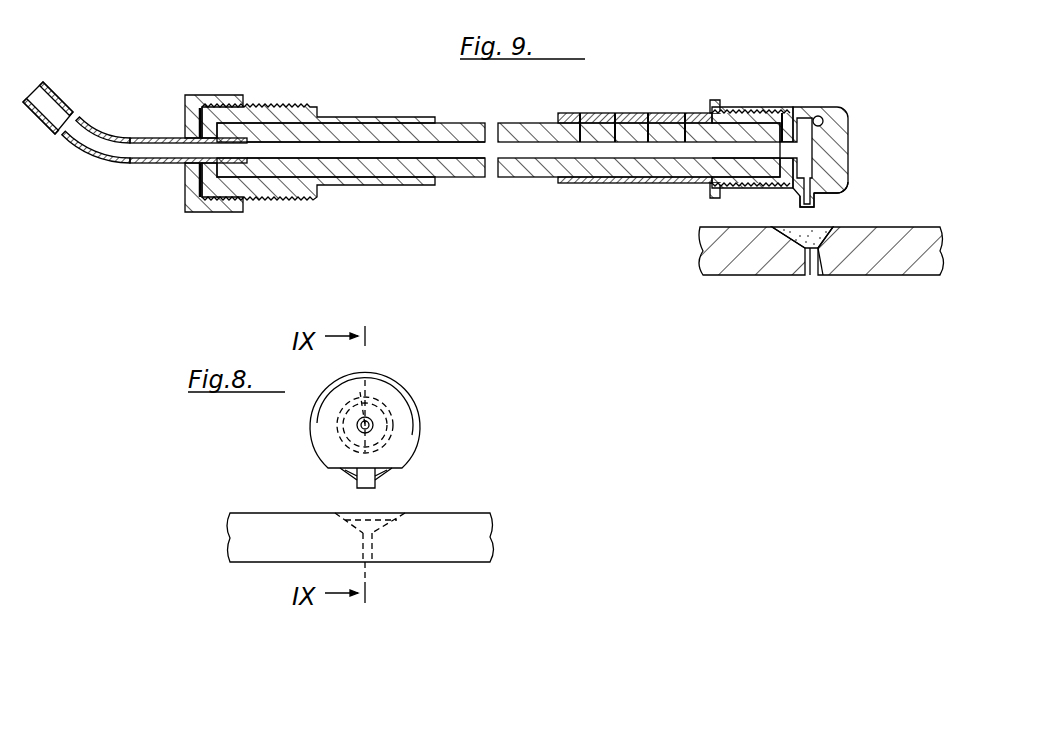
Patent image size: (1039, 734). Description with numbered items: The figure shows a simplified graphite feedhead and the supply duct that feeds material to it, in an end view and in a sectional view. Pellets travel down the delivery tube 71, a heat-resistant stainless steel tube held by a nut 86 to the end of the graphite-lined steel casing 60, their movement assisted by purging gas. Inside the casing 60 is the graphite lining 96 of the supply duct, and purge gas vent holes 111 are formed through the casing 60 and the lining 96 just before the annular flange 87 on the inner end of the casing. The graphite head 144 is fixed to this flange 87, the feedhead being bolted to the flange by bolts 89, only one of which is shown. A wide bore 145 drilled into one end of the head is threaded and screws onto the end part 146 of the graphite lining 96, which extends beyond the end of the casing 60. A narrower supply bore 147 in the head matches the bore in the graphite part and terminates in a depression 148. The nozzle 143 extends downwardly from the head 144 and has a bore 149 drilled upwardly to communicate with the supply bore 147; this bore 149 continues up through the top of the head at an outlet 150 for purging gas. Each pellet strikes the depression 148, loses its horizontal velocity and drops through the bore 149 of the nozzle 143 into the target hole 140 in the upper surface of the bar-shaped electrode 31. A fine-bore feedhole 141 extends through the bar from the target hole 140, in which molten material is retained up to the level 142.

In FIG. 9, the delivery tube 71 is at (70, 124).
In FIG. 9, the nut 86 is at (224, 98).
In FIG. 9, the steel casing 60 is at (285, 105).
In FIG. 9, the graphite lining 96 is at (356, 130).
In FIG. 9, the purge gas vent holes 111 is at (580, 113).
In FIG. 9, the annular flange 87 is at (714, 100).
In FIG. 8, the annular flange 87 is at (397, 382).
In FIG. 9, the end part of the graphite lining 146 is at (715, 175).
In FIG. 9, the wide bore 145 is at (749, 107).
In FIG. 9, the supply bore 147 is at (783, 140).
In FIG. 8, the supply bore 147 is at (368, 432).
In FIG. 9, the outlet for purging gas 150 is at (820, 116).
In FIG. 8, the outlet for purging gas 150 is at (360, 392).
In FIG. 9, the graphite head 144 is at (850, 130).
In FIG. 9, the depression 148 is at (827, 138).
In FIG. 9, the nozzle bore 149 is at (834, 198).
In FIG. 8, the nozzle bore 149 is at (353, 480).
In FIG. 9, the nozzle 143 is at (803, 204).
In FIG. 8, the nozzle 143 is at (378, 480).
In FIG. 9, the bar-shaped electrode 31 is at (745, 263).
In FIG. 8, the bar-shaped electrode 31 is at (445, 520).
In FIG. 9, the target hole 140 is at (833, 228).
In FIG. 8, the target hole 140 is at (338, 518).
In FIG. 9, the fine-bore feedhole 141 is at (803, 252).
In FIG. 8, the fine-bore feedhole 141 is at (378, 552).
In FIG. 9, the level of molten material 142 is at (819, 249).
In FIG. 8, the level of molten material 142 is at (382, 523).
In FIG. 8, the bolts 89 is at (408, 430).